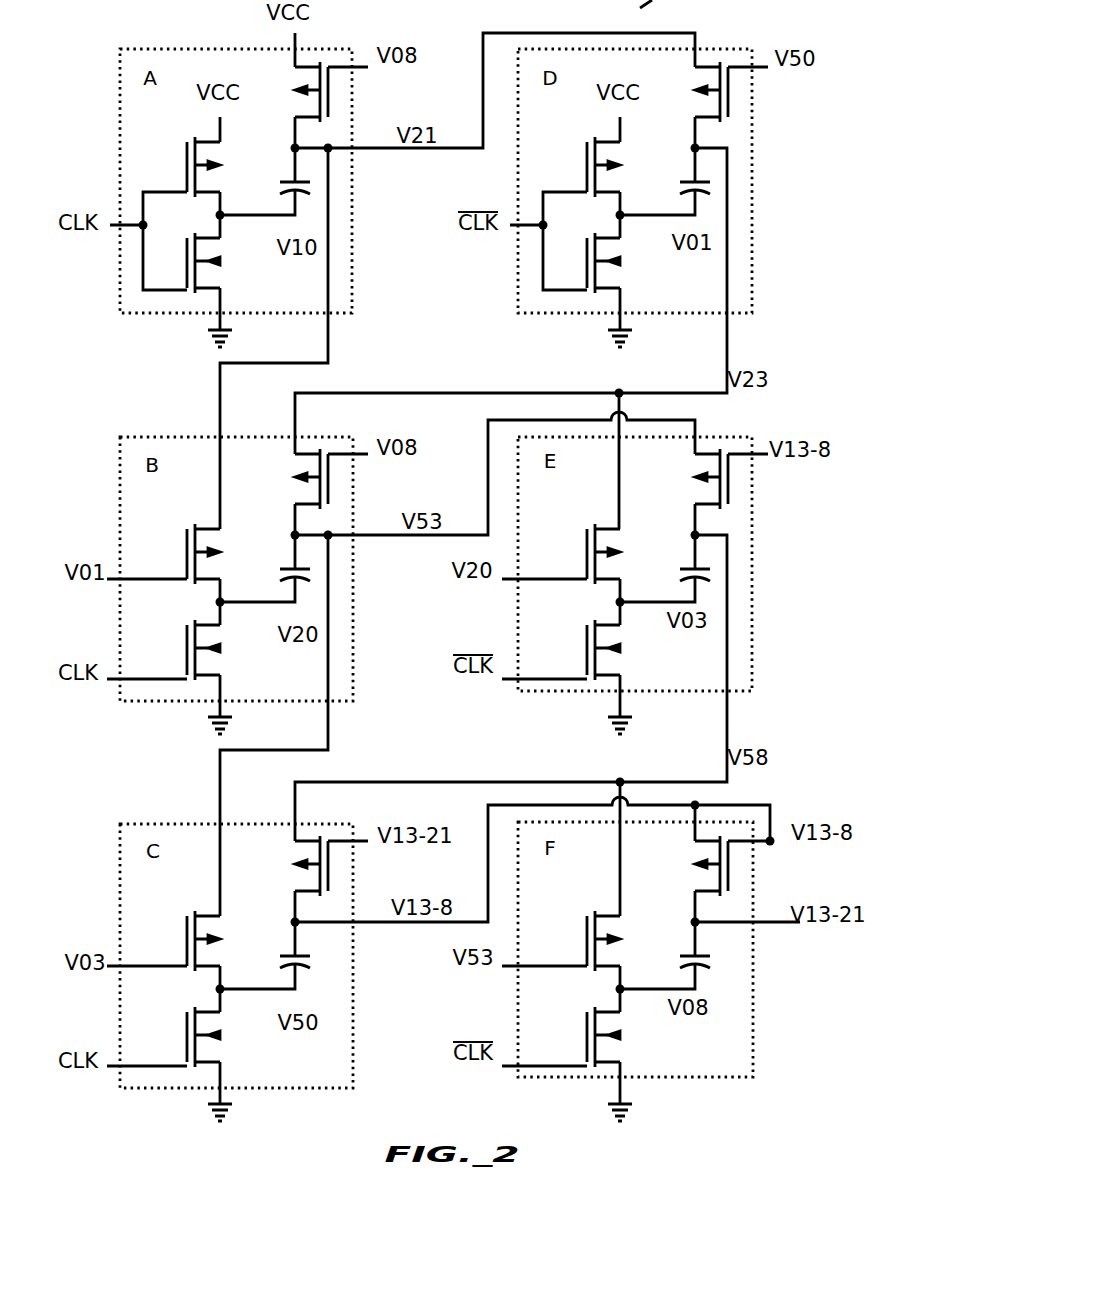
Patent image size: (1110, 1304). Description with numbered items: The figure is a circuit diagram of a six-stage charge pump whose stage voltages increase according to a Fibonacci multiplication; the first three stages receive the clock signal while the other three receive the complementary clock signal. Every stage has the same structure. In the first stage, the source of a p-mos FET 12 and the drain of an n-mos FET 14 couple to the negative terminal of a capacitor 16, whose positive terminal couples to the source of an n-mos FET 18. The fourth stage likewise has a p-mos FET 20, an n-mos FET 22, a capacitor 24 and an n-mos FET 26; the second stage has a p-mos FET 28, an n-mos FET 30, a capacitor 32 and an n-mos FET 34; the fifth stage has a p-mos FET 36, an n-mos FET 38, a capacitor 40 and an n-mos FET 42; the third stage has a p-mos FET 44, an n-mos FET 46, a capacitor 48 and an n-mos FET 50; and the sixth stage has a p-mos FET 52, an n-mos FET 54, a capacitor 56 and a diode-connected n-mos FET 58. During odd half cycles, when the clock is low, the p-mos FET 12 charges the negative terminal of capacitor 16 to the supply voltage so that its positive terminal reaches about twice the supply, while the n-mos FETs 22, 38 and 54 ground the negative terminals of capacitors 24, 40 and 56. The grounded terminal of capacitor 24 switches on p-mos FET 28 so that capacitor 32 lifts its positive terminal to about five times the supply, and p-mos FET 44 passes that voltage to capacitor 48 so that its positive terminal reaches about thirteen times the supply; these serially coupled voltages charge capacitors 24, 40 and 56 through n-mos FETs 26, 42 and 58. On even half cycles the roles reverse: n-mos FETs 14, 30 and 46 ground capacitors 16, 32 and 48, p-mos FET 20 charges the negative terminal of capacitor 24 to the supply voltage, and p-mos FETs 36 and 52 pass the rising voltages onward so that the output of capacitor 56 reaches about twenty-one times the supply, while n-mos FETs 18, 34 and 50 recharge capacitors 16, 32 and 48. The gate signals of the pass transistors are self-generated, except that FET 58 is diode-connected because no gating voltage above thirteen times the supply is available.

The p-mos FET 12 is at (187, 167).
The n-mos FET 14 is at (187, 263).
The capacitor 16 is at (280, 193).
The n-mos FET 18 is at (330, 91).
The p-mos FET 20 is at (587, 167).
The n-mos FET 22 is at (587, 263).
The capacitor 24 is at (680, 193).
The n-mos FET 26 is at (730, 89).
The p-mos FET 28 is at (187, 553).
The n-mos FET 30 is at (187, 652).
The capacitor 32 is at (280, 580).
The n-mos FET 34 is at (330, 478).
The p-mos FET 36 is at (587, 543).
The n-mos FET 38 is at (587, 642).
The capacitor 40 is at (680, 580).
The n-mos FET 42 is at (730, 472).
The p-mos FET 44 is at (187, 940).
The n-mos FET 46 is at (187, 1038).
The capacitor 48 is at (313, 960).
The n-mos FET 50 is at (332, 864).
The p-mos FET 52 is at (587, 938).
The n-mos FET 54 is at (587, 1033).
The capacitor 56 is at (710, 959).
The diode-connected n-mos FET 58 is at (730, 860).